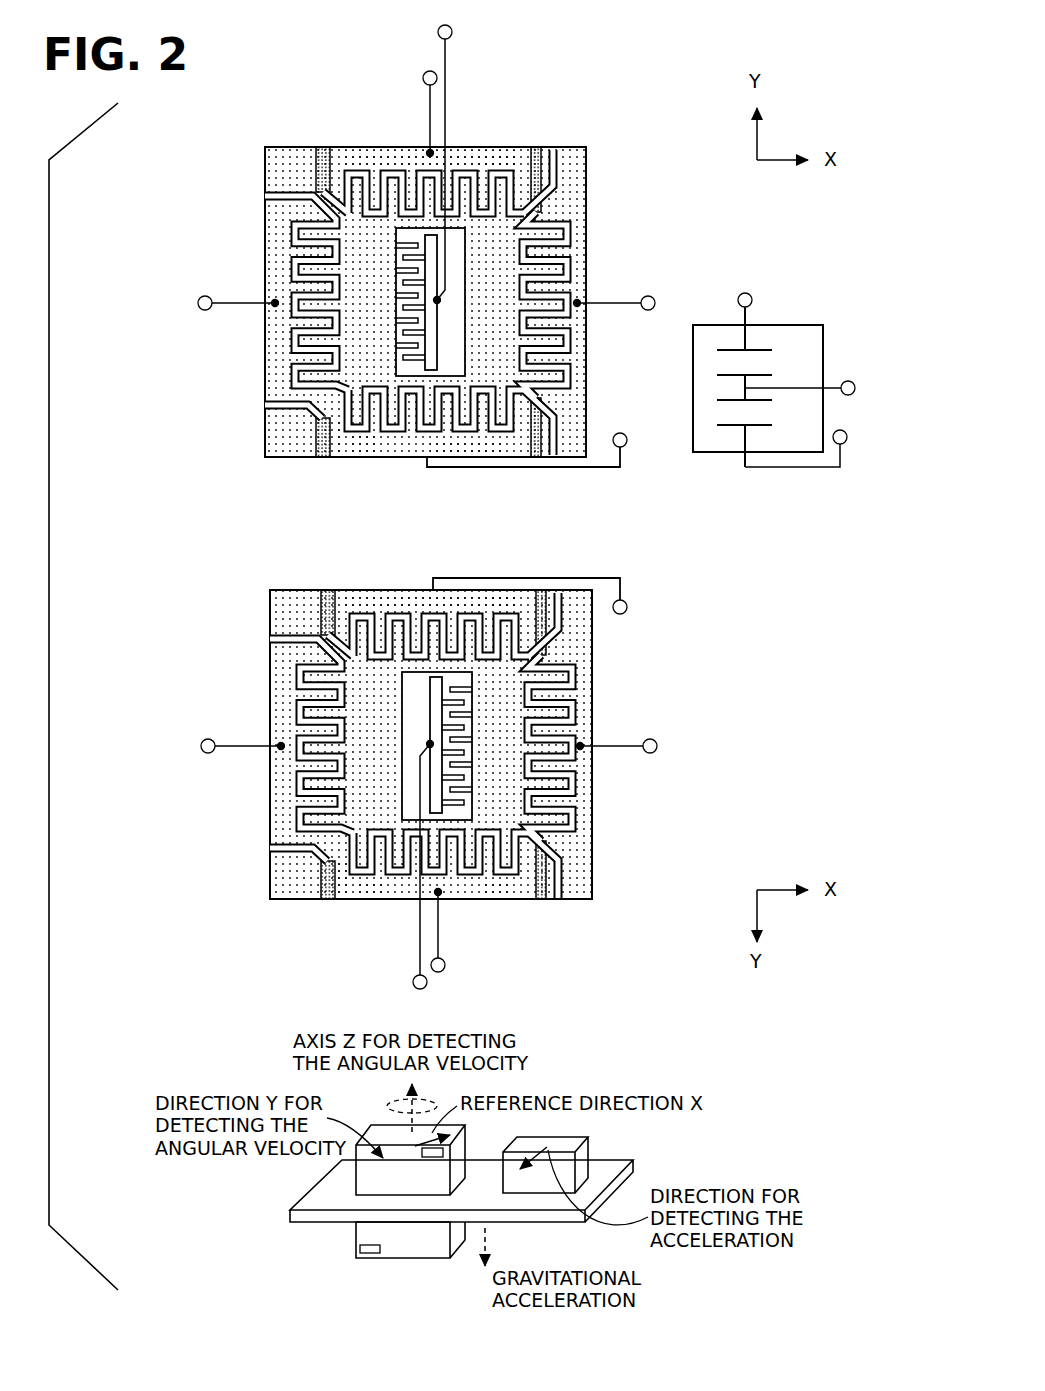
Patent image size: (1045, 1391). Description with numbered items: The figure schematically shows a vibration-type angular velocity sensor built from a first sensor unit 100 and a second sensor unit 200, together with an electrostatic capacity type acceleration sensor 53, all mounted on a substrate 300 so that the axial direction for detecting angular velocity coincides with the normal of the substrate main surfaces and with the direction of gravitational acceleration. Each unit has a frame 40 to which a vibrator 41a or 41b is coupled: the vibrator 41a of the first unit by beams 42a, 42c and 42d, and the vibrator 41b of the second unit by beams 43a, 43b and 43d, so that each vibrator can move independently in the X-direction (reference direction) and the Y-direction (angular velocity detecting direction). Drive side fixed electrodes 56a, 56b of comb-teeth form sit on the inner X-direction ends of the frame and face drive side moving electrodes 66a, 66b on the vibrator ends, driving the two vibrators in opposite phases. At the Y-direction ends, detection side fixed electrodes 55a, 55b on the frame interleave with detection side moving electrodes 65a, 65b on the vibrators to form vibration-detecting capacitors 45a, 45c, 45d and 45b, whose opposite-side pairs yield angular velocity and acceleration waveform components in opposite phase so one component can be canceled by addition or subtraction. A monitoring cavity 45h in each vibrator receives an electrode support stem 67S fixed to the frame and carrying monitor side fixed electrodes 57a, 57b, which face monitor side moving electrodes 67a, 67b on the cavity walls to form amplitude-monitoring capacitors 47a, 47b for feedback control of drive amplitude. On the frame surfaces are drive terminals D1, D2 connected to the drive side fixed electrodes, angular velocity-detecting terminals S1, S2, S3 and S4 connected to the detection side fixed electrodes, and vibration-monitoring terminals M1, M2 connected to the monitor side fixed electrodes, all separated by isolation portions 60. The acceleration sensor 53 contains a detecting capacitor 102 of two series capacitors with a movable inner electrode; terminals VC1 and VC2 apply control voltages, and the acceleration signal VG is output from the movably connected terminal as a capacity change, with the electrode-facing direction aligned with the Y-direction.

The first sensor unit 100 is at (313, 140).
The second sensor unit 200 is at (318, 584).
The frame 40 is at (592, 888).
The vibrator 41a is at (505, 432).
The vibrator 41b is at (510, 872).
The beam 42a is at (553, 162).
The beam 42c is at (292, 405).
The beam 42d is at (325, 182).
The beam 43a is at (558, 605).
The beam 43b is at (558, 882).
The beam 43d is at (330, 625).
The vibration-detecting capacitor 45a is at (447, 151).
The vibration-detecting capacitor 45b is at (341, 886).
The vibration-detecting capacitor 45c is at (336, 443).
The vibration-detecting capacitor 45d is at (452, 596).
The monitoring cavity 45h is at (470, 440).
The amplitude-monitoring capacitor 47a is at (405, 346).
The amplitude-monitoring capacitor 47b is at (402, 736).
The acceleration sensor 53 is at (796, 326).
The detection side fixed electrode 55a is at (497, 162).
The detection side fixed electrode 55b is at (502, 605).
The drive side fixed electrode 56a is at (300, 325).
The drive side fixed electrode 56b is at (305, 772).
The monitor side fixed electrode 57a is at (420, 282).
The monitor side fixed electrode 57b is at (462, 762).
The isolation portion 60 is at (322, 168).
The detection side moving electrode 65a is at (385, 176).
The detection side moving electrode 65b is at (390, 619).
The drive side moving electrode 66a is at (300, 243).
The drive side moving electrode 66b is at (305, 686).
The monitor side moving electrode 67a is at (400, 322).
The monitor side moving electrode 67b is at (468, 757).
The electrode support stem 67S is at (441, 300).
The detecting capacitor 102 is at (717, 408).
The substrate 300 is at (291, 1213).
The vibration-monitoring terminal M1 is at (462, 161).
The vibration-monitoring terminal M2 is at (405, 866).
The angular velocity-detecting terminal S1 is at (428, 102).
The angular velocity-detecting terminal S2 is at (622, 622).
The angular velocity-detecting terminal S3 is at (620, 428).
The angular velocity-detecting terminal S4 is at (453, 933).
The drive terminal D1 is at (430, 524).
The drive terminal D2 is at (427, 524).
The voltage-applying terminal VC1 is at (747, 285).
The voltage-applying terminal VC2 is at (820, 446).
The acceleration signal VG is at (805, 373).